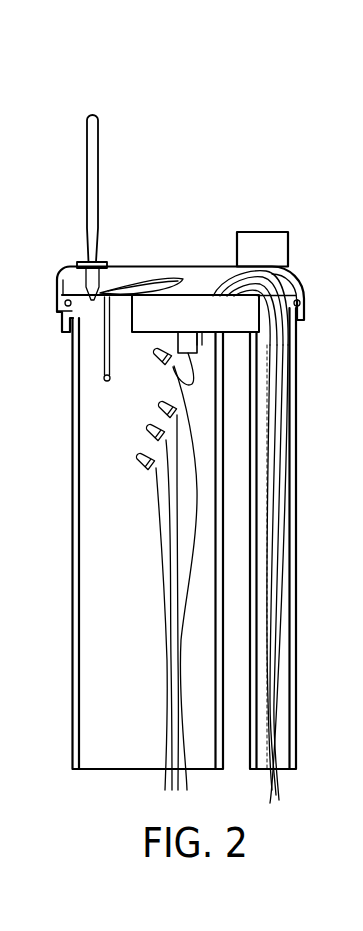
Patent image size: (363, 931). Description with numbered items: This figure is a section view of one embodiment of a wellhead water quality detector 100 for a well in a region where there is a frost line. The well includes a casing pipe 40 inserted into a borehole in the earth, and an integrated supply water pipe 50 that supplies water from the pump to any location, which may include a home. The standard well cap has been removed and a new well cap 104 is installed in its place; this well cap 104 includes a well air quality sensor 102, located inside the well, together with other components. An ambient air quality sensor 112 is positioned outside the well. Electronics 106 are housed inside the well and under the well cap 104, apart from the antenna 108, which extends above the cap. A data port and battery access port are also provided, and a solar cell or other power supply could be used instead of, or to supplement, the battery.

The casing pipe 40 is at (72, 540).
The integrated supply water pipe 50 is at (296, 537).
The wellhead water quality detector 100 is at (196, 251).
The well air quality sensor 102 is at (134, 336).
The well cap 104 is at (300, 272).
The electronics 106 is at (113, 293).
The antenna 108 is at (88, 122).
The ambient air quality sensor 112 is at (267, 229).